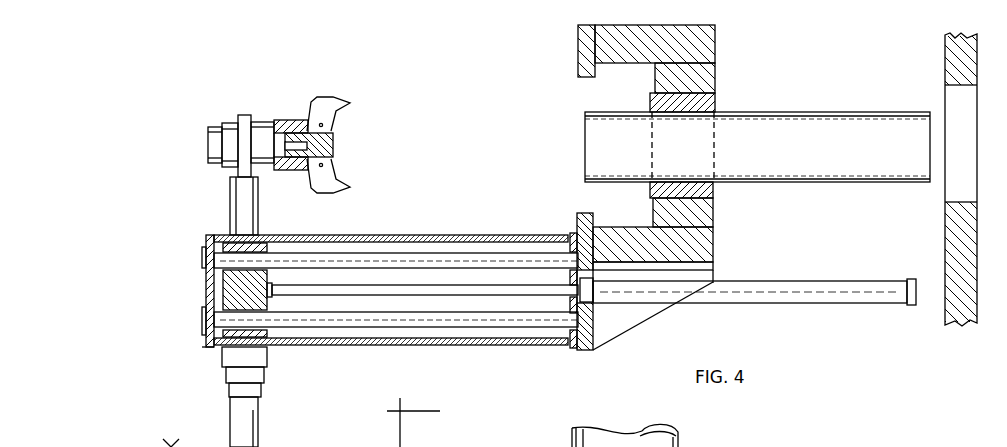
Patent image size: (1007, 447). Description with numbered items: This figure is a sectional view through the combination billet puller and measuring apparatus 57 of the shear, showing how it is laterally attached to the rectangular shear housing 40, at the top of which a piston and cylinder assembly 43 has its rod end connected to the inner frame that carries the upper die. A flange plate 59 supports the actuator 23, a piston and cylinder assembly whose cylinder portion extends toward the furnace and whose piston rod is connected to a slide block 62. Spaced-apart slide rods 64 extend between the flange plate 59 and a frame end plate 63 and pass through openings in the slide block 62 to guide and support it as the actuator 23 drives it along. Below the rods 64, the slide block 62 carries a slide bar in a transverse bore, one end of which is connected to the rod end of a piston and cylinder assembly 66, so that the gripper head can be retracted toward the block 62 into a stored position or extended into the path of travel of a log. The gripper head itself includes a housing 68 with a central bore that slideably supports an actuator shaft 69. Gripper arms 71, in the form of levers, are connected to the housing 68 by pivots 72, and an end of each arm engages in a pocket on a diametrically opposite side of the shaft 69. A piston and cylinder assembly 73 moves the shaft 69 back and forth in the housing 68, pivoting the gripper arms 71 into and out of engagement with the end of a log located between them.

The actuator 23 is at (757, 302).
The shear housing 40 is at (715, 48).
The piston and cylinder assembly 43 is at (684, 445).
The combination billet puller and measuring apparatus 57 is at (200, 352).
The flange plate 59 is at (577, 217).
The slide block 62 is at (268, 305).
The frame end plate 63 is at (205, 287).
The slide rods 64 is at (423, 250).
The piston and cylinder assembly 66 is at (260, 437).
The housing 68 is at (295, 123).
The actuator shaft 69 is at (335, 138).
The gripper arms 71 is at (318, 100).
The pivots 72 is at (328, 124).
The piston and cylinder assembly 73 is at (208, 138).